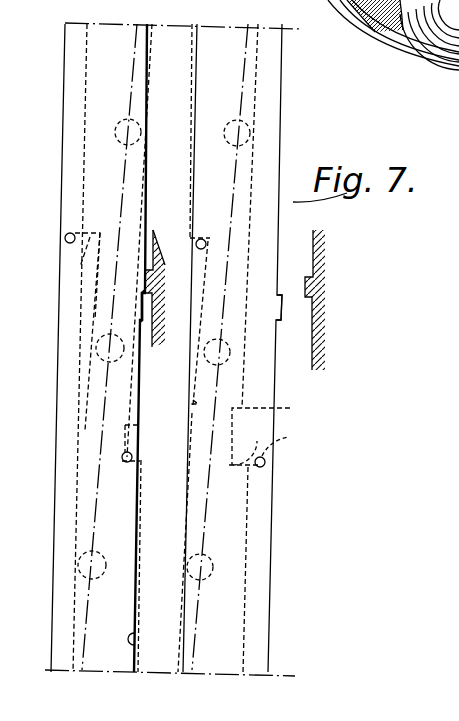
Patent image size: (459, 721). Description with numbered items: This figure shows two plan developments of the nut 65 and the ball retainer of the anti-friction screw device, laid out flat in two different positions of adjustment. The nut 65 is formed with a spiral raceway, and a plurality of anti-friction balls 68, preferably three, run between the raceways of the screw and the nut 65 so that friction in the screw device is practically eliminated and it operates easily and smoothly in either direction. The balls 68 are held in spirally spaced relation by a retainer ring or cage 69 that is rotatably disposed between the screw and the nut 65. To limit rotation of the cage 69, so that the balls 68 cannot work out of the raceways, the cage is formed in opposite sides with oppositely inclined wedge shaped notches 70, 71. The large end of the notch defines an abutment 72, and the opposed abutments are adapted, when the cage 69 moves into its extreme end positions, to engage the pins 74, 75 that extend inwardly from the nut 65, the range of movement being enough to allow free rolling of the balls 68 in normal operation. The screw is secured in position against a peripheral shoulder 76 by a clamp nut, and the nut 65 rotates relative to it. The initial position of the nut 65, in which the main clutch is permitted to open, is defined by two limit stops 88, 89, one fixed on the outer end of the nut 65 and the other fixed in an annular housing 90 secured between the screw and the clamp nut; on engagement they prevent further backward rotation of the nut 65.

The nut 65 is at (280, 103).
The anti-friction balls 68 is at (228, 143).
The retainer ring or cage 69 is at (192, 50).
The wedge shaped notch 70 is at (90, 370).
The wedge shaped notch 71 is at (125, 424).
The abutment 72 is at (84, 276).
The pin 74 is at (75, 236).
The pin 75 is at (255, 465).
The peripheral shoulder 76 is at (285, 443).
The limit stop 88 is at (142, 322).
The limit stop 89 is at (150, 282).
The annular housing 90 is at (317, 310).